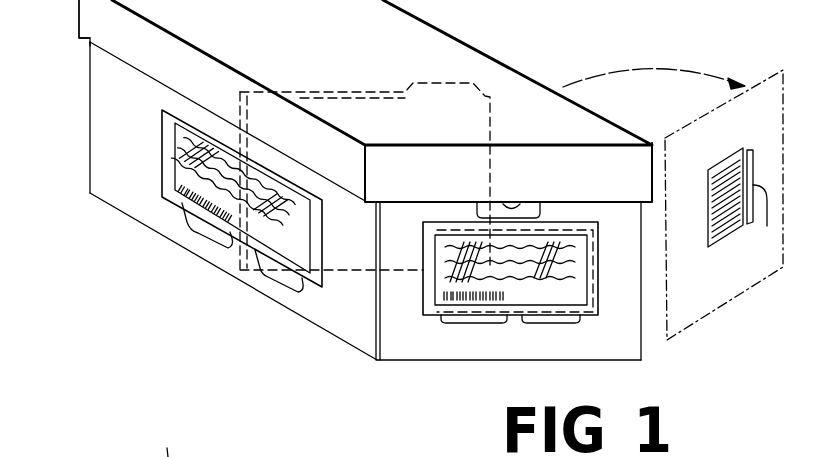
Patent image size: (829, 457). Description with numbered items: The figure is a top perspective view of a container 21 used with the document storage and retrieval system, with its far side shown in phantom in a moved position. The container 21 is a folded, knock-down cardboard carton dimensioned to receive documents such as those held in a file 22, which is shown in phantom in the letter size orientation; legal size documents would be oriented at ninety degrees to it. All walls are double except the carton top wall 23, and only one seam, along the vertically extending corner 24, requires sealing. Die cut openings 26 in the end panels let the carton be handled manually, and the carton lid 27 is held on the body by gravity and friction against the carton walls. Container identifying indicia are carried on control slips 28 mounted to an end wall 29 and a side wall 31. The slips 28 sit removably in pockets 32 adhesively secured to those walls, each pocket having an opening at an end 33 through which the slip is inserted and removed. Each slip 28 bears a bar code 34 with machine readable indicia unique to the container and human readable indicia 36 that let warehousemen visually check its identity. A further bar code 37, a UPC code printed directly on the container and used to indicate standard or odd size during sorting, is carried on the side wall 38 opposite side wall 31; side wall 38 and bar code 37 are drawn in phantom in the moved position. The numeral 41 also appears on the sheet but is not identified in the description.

The container 21 is at (282, 320).
The file 22 is at (492, 107).
The carton top wall 23 is at (322, 42).
The vertically extending corner 24 is at (380, 335).
The die cut openings 26 is at (522, 207).
The carton lid 27 is at (123, 35).
The control slips 28 is at (190, 170).
The end wall 29 is at (608, 343).
The side wall 31 is at (143, 210).
The pockets 32 is at (233, 237).
The end 33 is at (166, 143).
The bar code 34 is at (200, 233).
The human readable indicia 36 is at (275, 280).
The bar code 37 is at (743, 203).
The side wall 38 is at (642, 278).
The container 41 is at (172, 438).